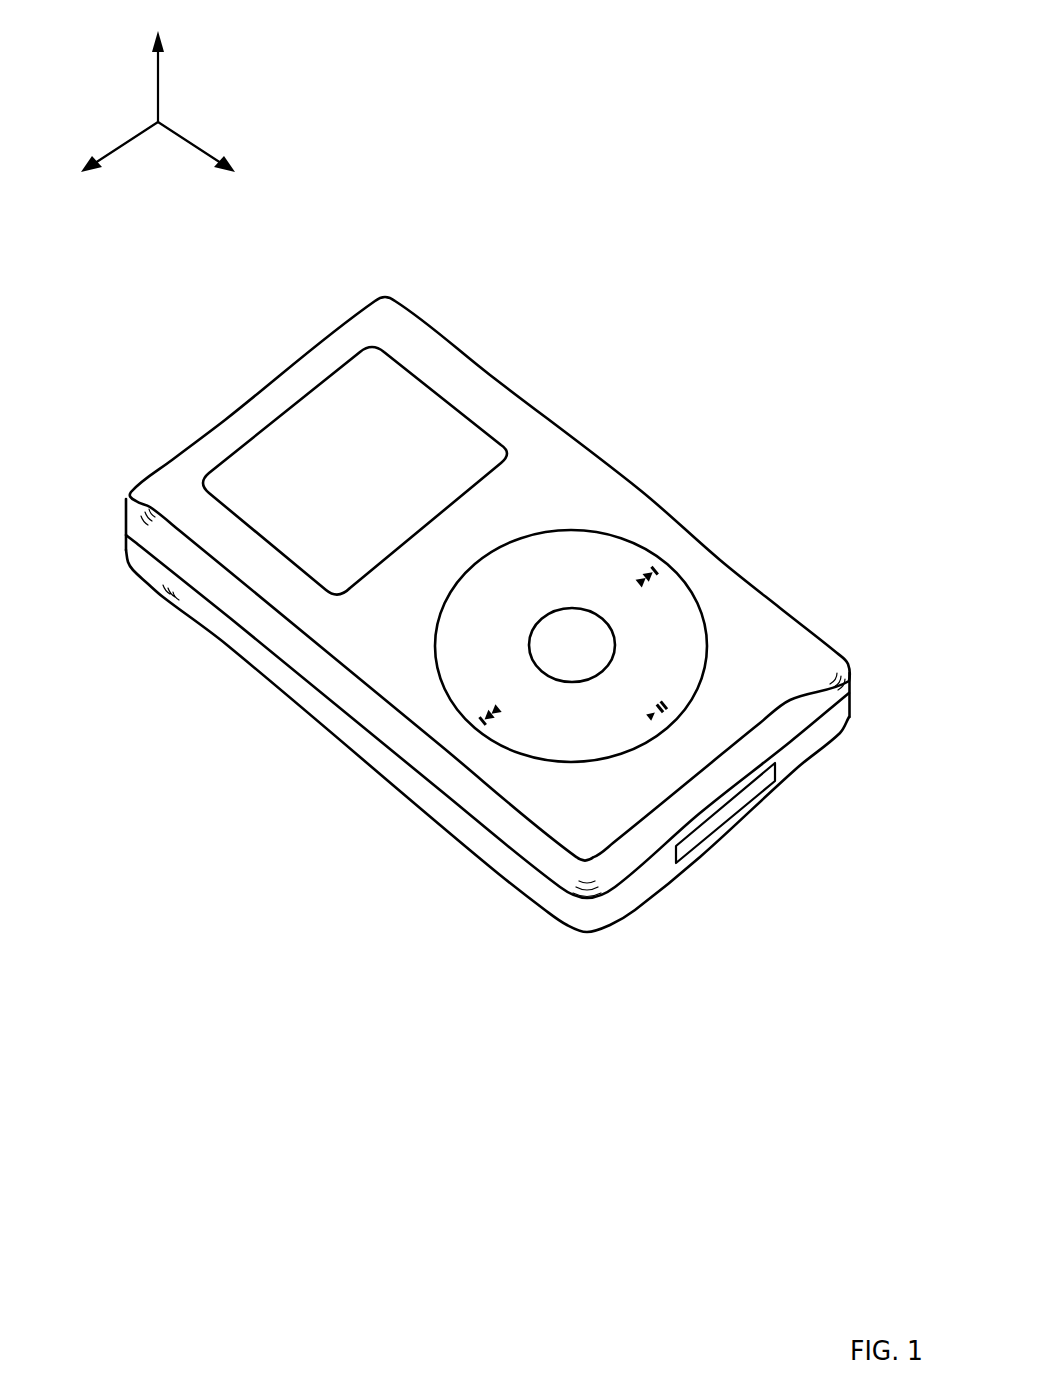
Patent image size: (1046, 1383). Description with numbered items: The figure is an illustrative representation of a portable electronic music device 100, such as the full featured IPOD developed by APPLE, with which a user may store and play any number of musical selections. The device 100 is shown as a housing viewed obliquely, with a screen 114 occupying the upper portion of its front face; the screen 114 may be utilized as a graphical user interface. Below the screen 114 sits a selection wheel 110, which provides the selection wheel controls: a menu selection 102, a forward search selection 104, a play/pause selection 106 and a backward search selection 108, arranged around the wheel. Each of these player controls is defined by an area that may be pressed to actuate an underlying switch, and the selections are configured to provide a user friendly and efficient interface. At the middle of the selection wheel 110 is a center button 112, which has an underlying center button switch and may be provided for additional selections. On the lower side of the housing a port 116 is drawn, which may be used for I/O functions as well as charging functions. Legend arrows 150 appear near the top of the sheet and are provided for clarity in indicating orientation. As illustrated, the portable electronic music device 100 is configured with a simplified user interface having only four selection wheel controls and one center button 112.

The portable electronic music device 100 is at (679, 268).
The menu selection 102 is at (522, 550).
The forward search selection 104 is at (662, 563).
The play/pause selection 106 is at (670, 698).
The backward search selection 108 is at (480, 724).
The selection wheel 110 is at (440, 675).
The center button 112 is at (617, 645).
The screen 114 is at (217, 473).
The port 116 is at (727, 826).
The legend arrows 150 is at (229, 57).